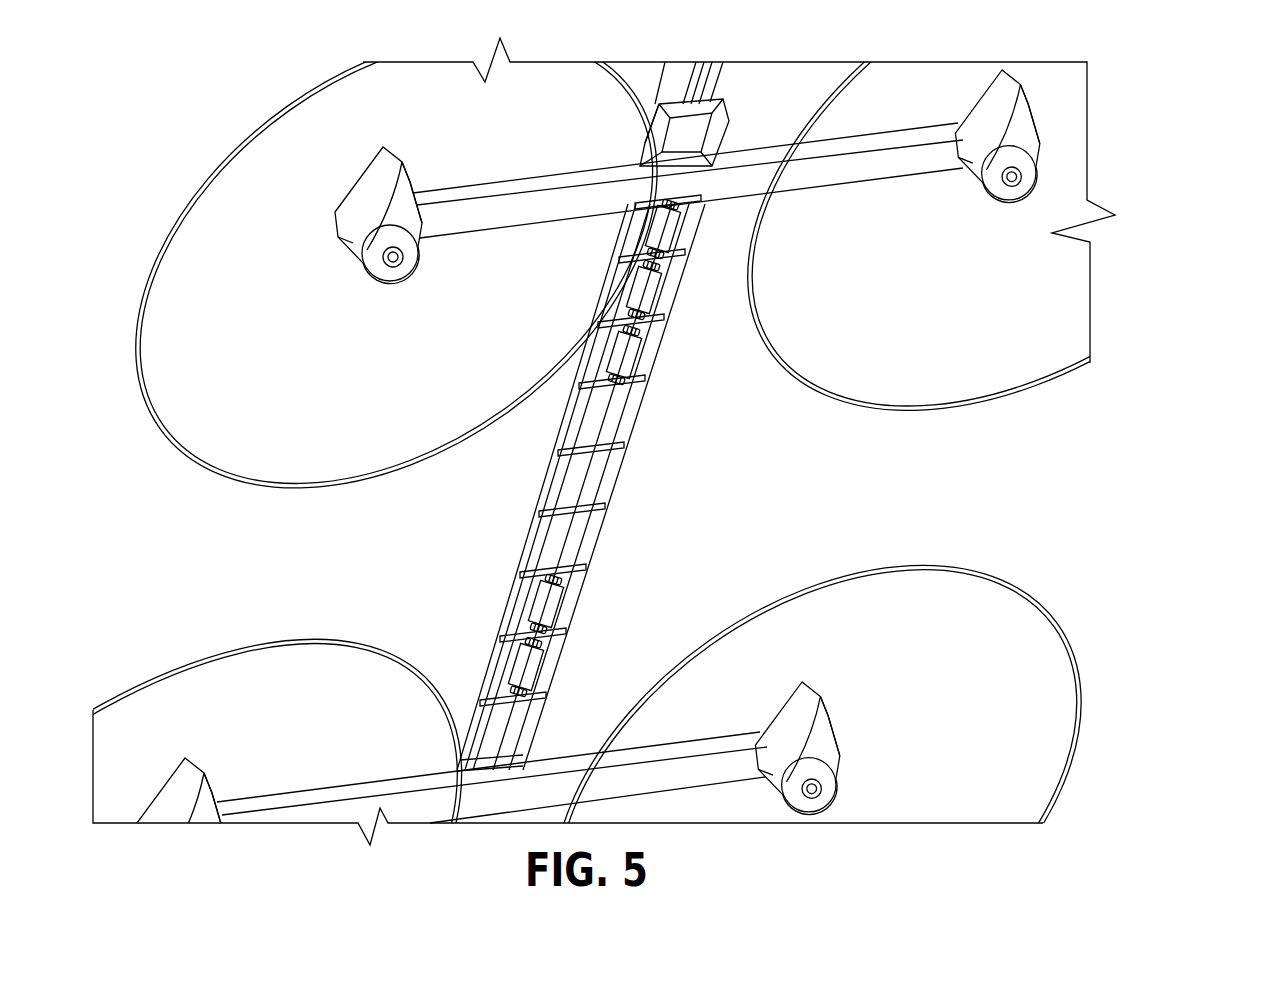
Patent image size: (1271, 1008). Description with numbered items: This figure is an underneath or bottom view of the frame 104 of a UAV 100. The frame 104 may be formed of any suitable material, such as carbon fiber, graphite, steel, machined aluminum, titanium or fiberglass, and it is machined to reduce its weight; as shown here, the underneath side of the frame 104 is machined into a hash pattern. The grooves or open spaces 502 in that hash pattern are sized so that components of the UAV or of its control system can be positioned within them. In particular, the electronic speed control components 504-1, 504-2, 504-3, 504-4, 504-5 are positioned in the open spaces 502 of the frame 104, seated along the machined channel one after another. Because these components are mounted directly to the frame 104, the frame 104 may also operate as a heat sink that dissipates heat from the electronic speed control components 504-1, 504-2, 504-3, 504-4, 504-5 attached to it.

The unmanned aerial vehicle 100 is at (1122, 110).
The frame 104 is at (627, 423).
The open spaces 502 is at (582, 469).
The electronic speed control component 504-1 is at (523, 671).
The electronic speed control component 504-2 is at (542, 607).
The electronic speed control component 504-3 is at (628, 370).
The electronic speed control component 504-4 is at (648, 300).
The electronic speed control component 504-5 is at (665, 232).